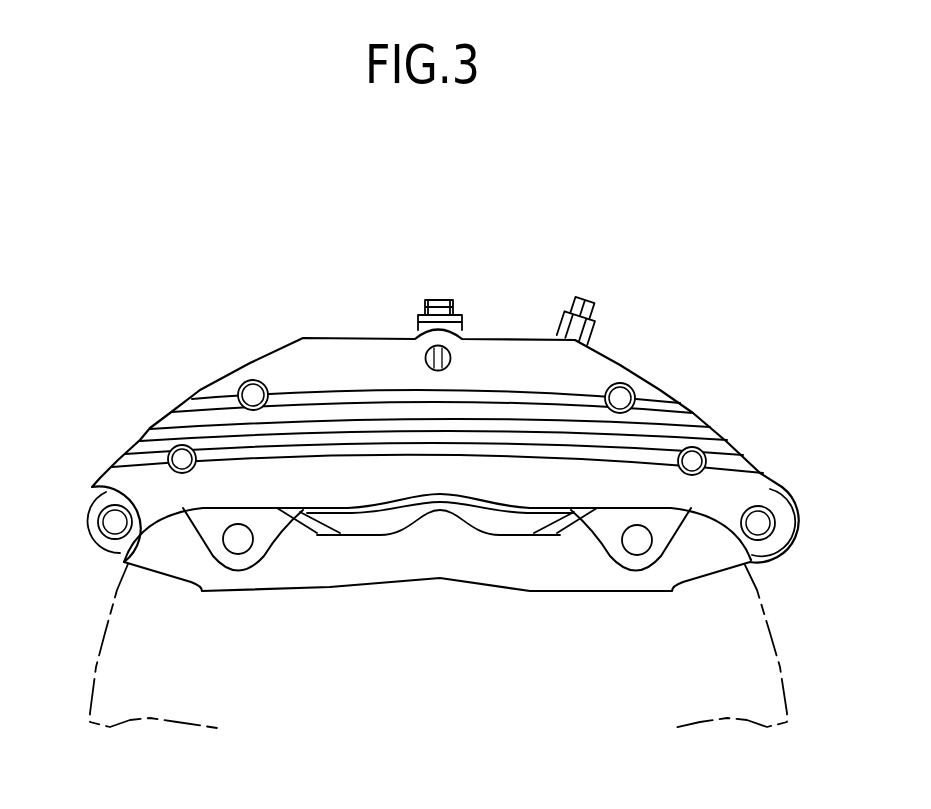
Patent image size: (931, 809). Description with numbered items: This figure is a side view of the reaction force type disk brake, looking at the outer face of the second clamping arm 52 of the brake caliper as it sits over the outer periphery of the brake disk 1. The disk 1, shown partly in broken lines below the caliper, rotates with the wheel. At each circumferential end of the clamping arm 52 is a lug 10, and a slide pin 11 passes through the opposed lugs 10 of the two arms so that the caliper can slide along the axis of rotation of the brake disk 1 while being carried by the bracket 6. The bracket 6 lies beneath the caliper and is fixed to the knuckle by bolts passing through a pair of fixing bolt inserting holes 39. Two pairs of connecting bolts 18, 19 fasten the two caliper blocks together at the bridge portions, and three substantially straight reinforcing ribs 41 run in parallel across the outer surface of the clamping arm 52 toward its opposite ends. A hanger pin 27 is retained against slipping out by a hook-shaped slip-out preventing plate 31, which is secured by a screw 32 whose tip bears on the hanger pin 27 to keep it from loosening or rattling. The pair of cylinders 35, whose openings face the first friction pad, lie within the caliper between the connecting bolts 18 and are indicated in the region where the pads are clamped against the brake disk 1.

The brake disk 1 is at (758, 590).
The bracket 6 is at (440, 578).
The lug 10 is at (80, 498).
The slide pin 11 is at (113, 522).
The connecting bolt 18 is at (252, 393).
The connecting bolt 19 is at (181, 458).
The hanger pin 27 is at (426, 358).
The slip-out preventing plate 31 is at (340, 534).
The screw 32 is at (438, 300).
The cylinder 35 is at (378, 522).
The fixing bolt inserting hole 39 is at (239, 548).
The reinforcing rib 41 is at (523, 398).
The second clamping arm 52 is at (492, 357).